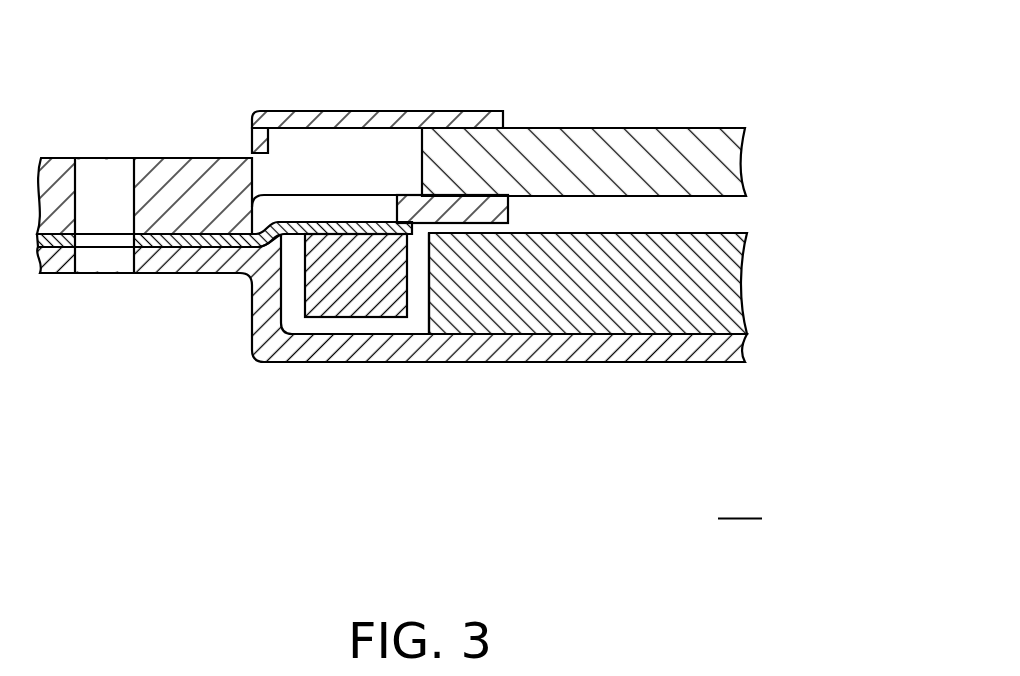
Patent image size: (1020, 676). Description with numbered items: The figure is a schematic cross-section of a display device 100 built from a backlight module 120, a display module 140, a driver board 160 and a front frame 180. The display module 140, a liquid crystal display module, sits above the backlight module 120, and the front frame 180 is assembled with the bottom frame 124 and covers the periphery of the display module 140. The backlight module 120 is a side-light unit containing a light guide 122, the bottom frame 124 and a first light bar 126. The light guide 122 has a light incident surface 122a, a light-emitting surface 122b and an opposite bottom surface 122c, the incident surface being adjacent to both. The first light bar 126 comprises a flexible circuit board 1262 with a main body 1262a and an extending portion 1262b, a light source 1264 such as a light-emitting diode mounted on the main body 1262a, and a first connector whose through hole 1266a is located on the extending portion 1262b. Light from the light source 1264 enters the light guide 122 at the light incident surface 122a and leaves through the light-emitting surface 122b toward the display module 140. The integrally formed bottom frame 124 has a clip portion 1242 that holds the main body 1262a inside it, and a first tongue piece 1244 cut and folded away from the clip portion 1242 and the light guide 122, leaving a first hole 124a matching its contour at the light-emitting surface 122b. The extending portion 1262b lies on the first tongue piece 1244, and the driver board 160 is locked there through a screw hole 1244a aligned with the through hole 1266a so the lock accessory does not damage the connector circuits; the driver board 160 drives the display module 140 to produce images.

The display device 100 is at (740, 504).
The backlight module 120 is at (616, 325).
The light guide 122 is at (543, 297).
The light incident surface 122a is at (429, 310).
The light-emitting surface 122b is at (666, 229).
The bottom surface 122c is at (611, 336).
The bottom frame 124 is at (370, 435).
The first hole 124a is at (382, 185).
The clip portion 1242 is at (262, 308).
The first tongue piece 1244 is at (215, 260).
The screw hole 1244a is at (132, 265).
The first light bar 126 is at (412, 263).
The flexible circuit board 1262 is at (370, 47).
The main body 1262a is at (304, 242).
The extending portion 1262b is at (223, 242).
The light source 1264 is at (383, 257).
The through hole 1266a is at (137, 236).
The display module 140 is at (729, 146).
The driver board 160 is at (147, 182).
The front frame 180 is at (474, 120).